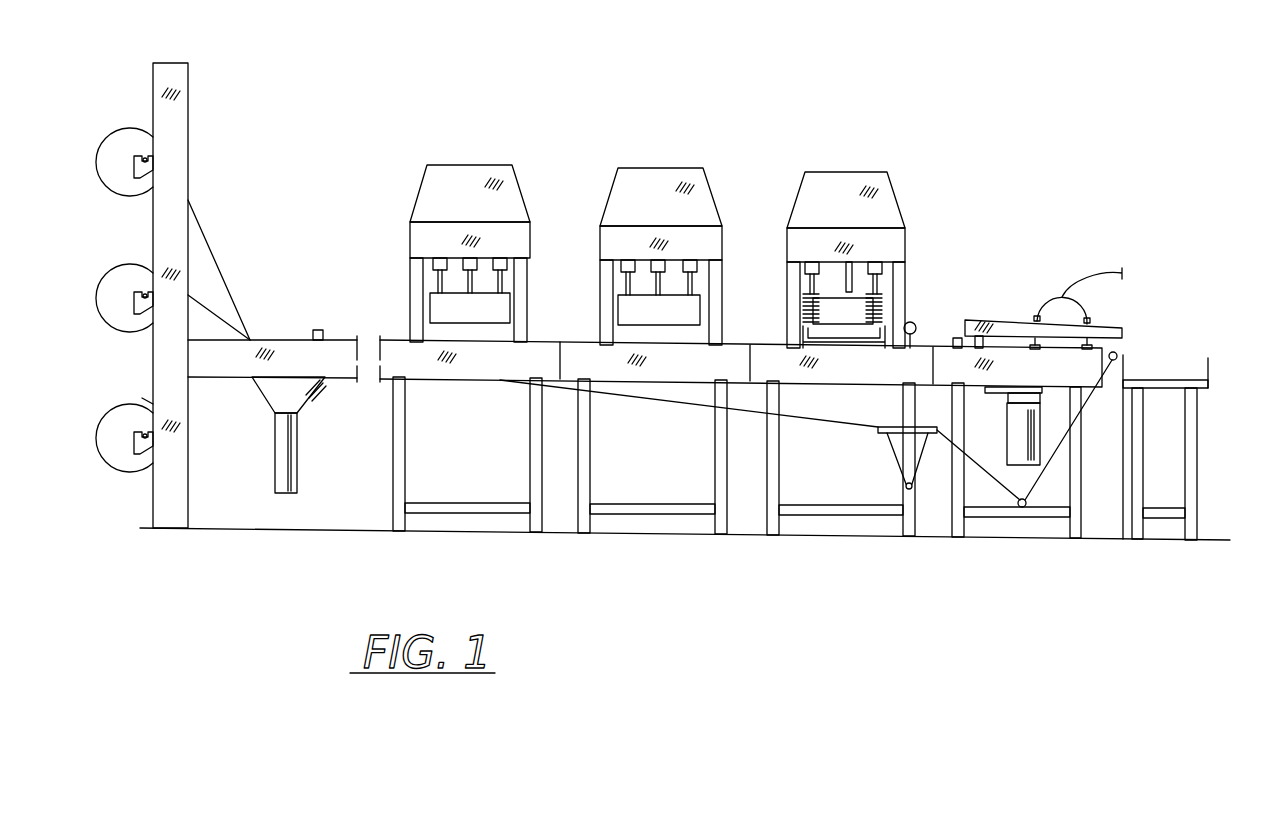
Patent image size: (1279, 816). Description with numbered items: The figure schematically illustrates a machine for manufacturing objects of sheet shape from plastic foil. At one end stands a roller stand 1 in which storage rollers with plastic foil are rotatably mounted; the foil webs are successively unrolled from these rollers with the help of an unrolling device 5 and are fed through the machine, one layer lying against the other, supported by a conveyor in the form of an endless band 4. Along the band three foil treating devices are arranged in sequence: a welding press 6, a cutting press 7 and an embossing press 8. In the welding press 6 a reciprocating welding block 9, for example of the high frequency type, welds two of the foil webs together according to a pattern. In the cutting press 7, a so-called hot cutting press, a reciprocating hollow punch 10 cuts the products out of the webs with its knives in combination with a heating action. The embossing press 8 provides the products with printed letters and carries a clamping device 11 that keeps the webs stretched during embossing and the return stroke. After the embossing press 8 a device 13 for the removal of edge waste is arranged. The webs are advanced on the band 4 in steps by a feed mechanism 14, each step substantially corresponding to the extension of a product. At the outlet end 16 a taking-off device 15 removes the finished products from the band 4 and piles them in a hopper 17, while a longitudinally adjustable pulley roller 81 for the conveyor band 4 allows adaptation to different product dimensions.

The roller stand 1 is at (196, 128).
The endless band 4 is at (661, 403).
The unrolling device 5 is at (305, 410).
The welding press 6 is at (467, 167).
The cutting press 7 is at (662, 170).
The embossing press 8 is at (845, 174).
The welding block 9 is at (447, 312).
The hollow punch 10 is at (643, 312).
The clamping device 11 is at (890, 307).
The device for the removal of edge waste 13 is at (914, 323).
The feed mechanism 14 is at (991, 416).
The taking-off device 15 is at (1052, 275).
The outlet end 16 is at (1107, 398).
The hopper 17 is at (1212, 390).
The pulley roller 81 is at (1115, 352).